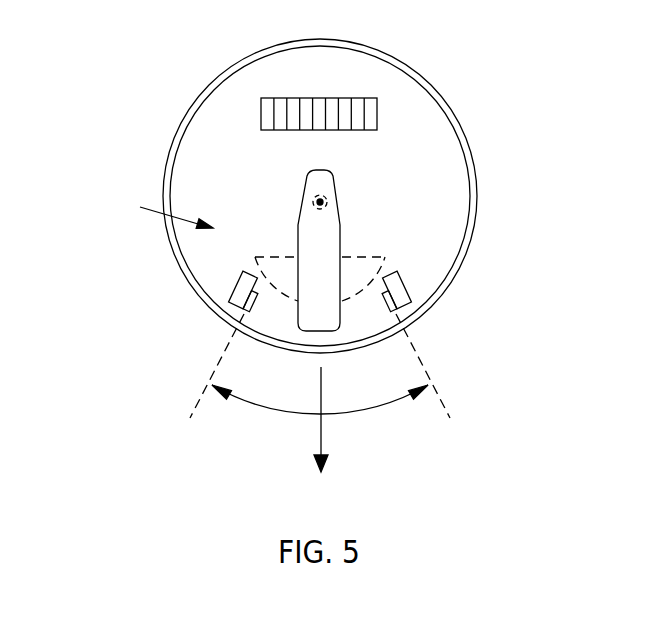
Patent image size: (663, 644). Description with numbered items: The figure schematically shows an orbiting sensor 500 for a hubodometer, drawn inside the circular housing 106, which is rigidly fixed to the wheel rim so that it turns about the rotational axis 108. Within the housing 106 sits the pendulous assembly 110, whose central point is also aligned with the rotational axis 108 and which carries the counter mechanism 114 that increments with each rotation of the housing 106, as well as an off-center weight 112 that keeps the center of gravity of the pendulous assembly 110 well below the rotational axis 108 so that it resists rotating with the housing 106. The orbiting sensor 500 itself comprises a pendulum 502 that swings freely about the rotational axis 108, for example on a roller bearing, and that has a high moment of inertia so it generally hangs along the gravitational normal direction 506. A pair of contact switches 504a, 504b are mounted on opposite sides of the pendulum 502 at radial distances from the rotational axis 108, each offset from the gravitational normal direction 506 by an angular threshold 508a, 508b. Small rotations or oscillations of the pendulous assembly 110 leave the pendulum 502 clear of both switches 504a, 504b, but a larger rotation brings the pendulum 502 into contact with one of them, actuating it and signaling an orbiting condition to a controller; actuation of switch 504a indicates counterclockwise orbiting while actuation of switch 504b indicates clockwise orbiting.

The housing 106 is at (212, 83).
The pendulous assembly 110 is at (203, 180).
The counter mechanism 114 is at (365, 98).
The rotational axis 108 is at (330, 203).
The off-center weight 112 is at (358, 258).
The orbiting sensor 500 is at (156, 214).
The pendulum 502 is at (298, 238).
The contact switch 504a is at (233, 289).
The contact switch 504b is at (407, 289).
The gravitational normal direction 506 is at (315, 434).
The angular threshold 508a is at (268, 412).
The angular threshold 508b is at (373, 413).